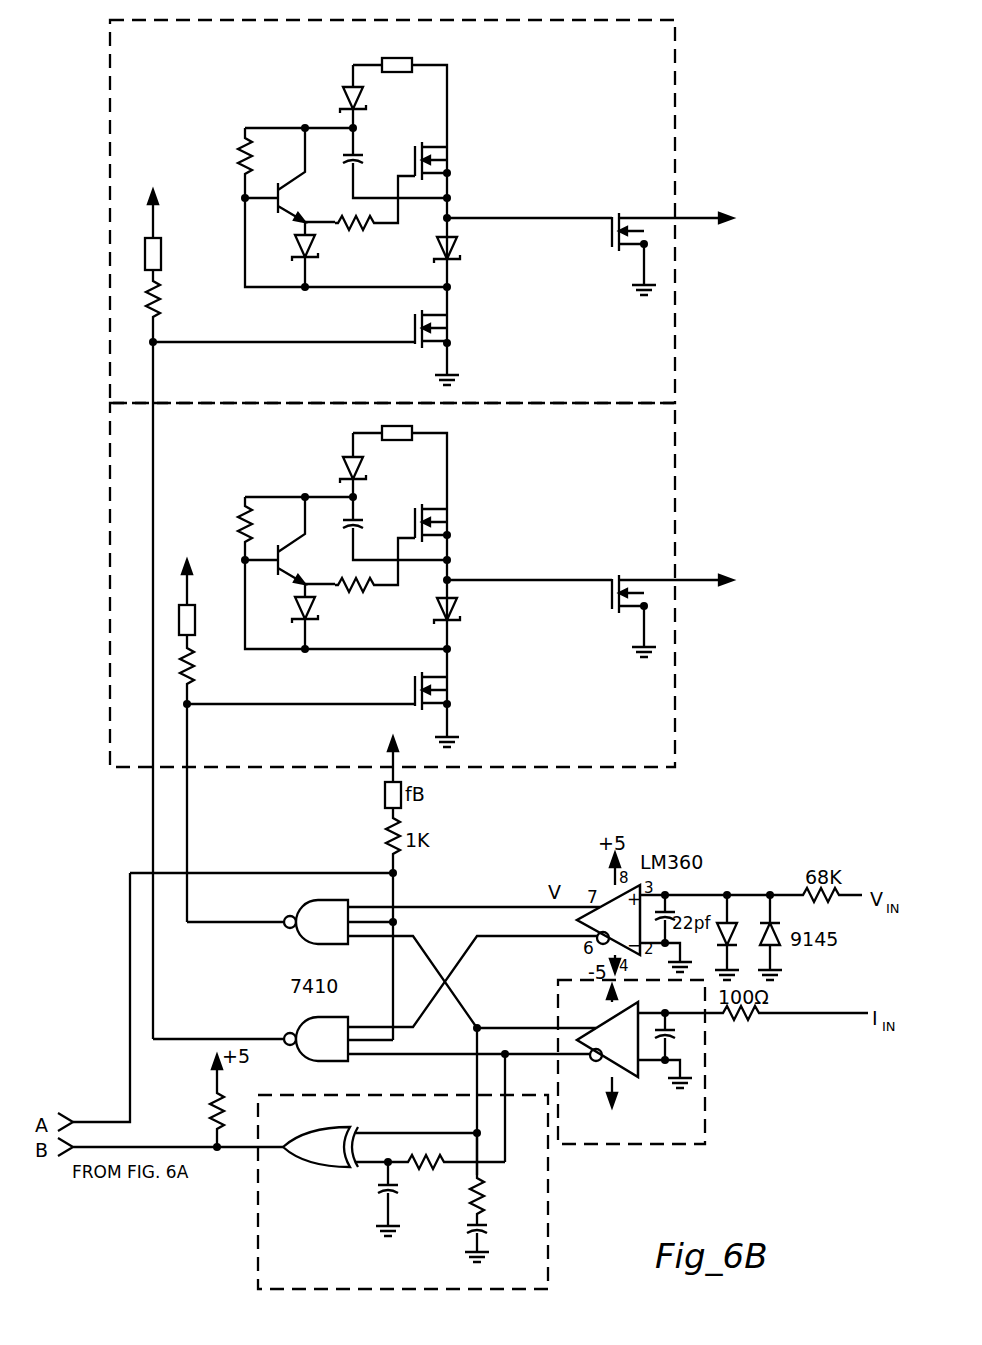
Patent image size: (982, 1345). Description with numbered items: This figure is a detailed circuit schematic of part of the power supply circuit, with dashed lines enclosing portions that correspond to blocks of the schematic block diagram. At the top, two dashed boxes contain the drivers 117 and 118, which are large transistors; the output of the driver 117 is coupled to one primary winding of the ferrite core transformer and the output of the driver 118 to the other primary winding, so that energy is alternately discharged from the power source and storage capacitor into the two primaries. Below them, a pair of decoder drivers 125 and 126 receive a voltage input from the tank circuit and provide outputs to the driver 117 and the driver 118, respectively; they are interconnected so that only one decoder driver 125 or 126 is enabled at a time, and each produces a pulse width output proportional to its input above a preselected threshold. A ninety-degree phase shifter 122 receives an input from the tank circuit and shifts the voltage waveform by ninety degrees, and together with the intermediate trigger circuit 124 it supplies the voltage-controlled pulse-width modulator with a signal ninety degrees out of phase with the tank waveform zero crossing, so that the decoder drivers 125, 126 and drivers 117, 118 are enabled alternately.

The driver 117 is at (675, 522).
The driver 118 is at (675, 131).
The 90° phase shifter 122 is at (705, 1133).
The trigger circuit 124 is at (548, 1258).
The decoder driver 125 is at (288, 942).
The decoder driver 126 is at (291, 1017).